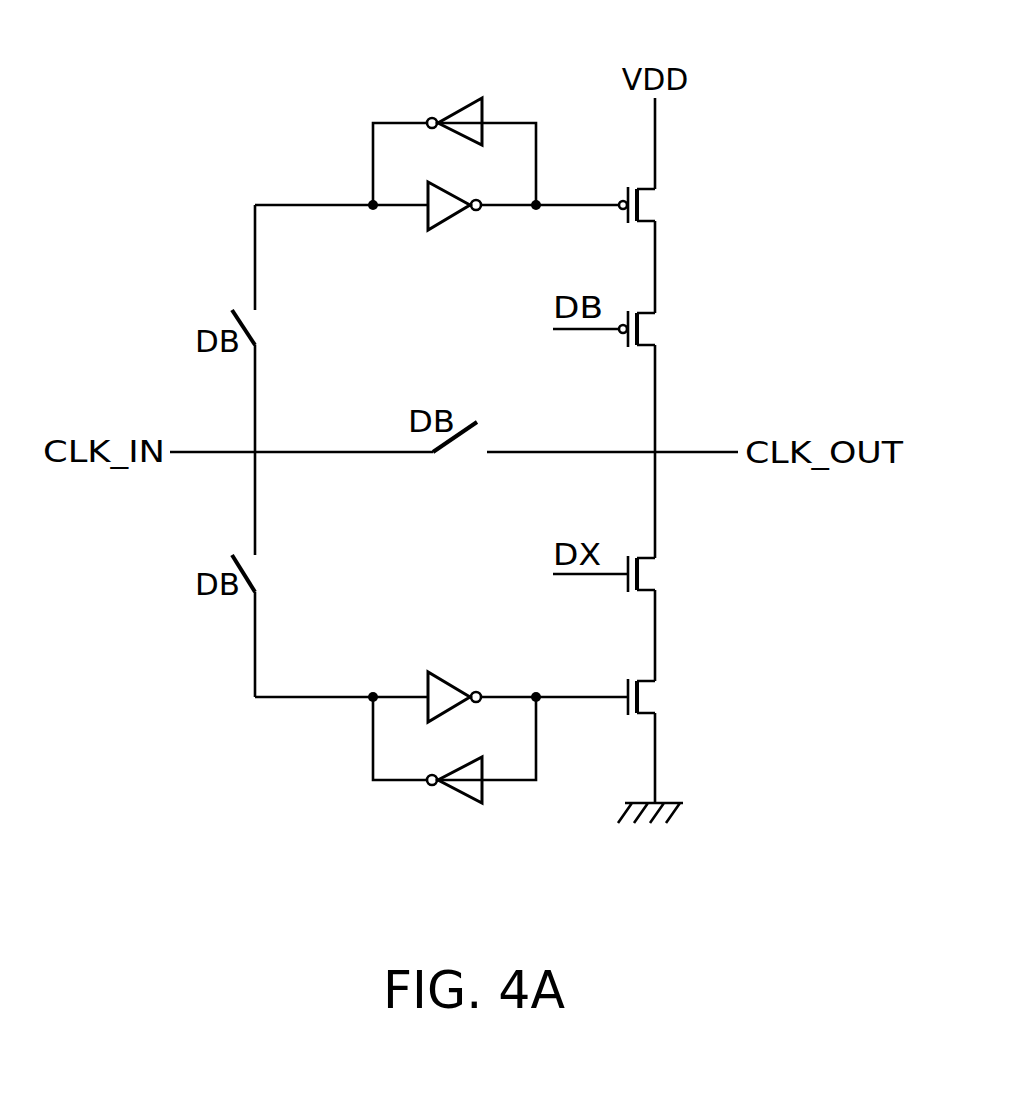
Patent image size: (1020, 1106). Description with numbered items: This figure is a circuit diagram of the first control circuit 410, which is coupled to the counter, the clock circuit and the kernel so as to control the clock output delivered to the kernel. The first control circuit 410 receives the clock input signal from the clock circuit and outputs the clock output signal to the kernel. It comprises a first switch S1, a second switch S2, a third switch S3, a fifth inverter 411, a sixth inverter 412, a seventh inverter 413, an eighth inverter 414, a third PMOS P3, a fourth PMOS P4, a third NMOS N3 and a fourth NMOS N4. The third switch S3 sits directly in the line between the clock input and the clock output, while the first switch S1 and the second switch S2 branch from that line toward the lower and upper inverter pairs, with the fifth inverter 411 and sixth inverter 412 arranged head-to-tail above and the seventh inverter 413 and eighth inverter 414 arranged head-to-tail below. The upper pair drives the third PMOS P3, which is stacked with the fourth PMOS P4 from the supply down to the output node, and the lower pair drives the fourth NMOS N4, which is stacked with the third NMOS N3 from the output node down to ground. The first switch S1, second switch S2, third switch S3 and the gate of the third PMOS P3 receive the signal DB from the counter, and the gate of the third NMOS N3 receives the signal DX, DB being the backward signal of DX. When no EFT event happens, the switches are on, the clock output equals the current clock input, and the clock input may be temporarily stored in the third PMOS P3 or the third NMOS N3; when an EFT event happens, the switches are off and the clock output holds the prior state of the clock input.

The first control circuit 410 is at (132, 45).
The fifth inverter 411 is at (457, 100).
The sixth inverter 412 is at (451, 225).
The seventh inverter 413 is at (451, 680).
The eighth inverter 414 is at (455, 800).
The first switch S1 is at (252, 572).
The second switch S2 is at (252, 325).
The third switch S3 is at (465, 450).
The third PMOS P3 is at (650, 204).
The fourth PMOS P4 is at (650, 329).
The third NMOS N3 is at (650, 574).
The fourth NMOS N4 is at (650, 697).